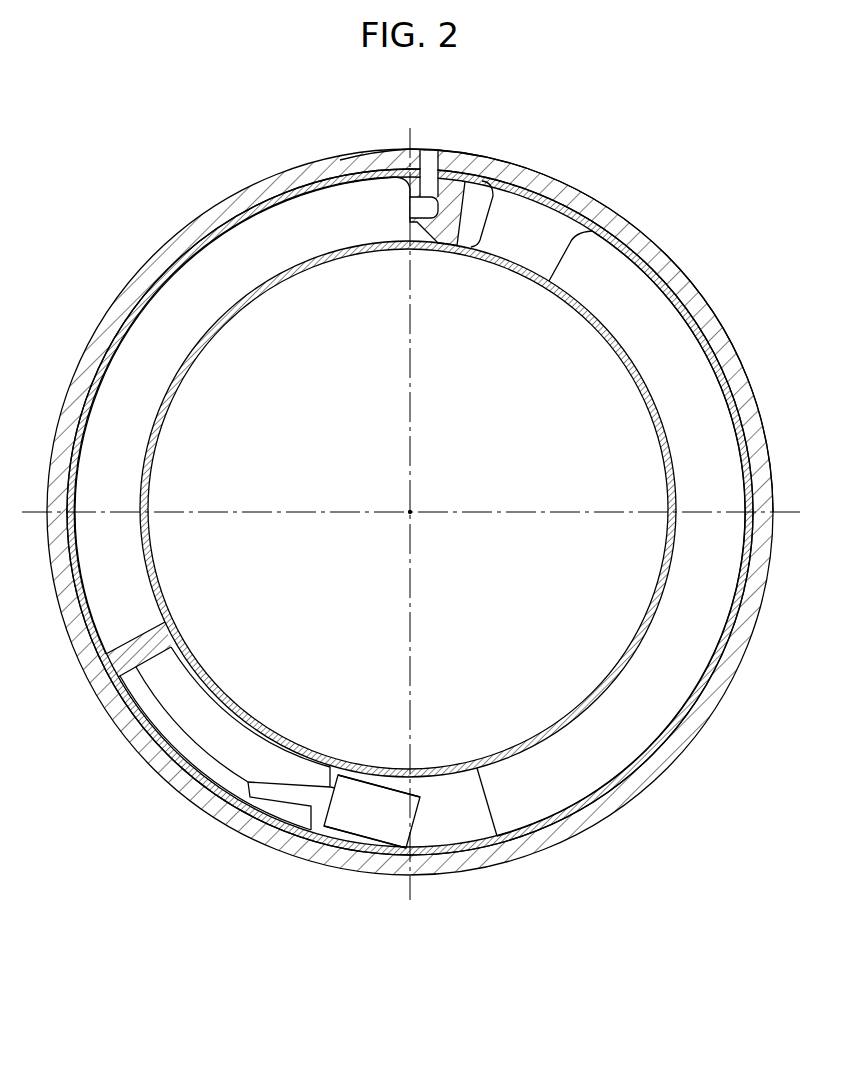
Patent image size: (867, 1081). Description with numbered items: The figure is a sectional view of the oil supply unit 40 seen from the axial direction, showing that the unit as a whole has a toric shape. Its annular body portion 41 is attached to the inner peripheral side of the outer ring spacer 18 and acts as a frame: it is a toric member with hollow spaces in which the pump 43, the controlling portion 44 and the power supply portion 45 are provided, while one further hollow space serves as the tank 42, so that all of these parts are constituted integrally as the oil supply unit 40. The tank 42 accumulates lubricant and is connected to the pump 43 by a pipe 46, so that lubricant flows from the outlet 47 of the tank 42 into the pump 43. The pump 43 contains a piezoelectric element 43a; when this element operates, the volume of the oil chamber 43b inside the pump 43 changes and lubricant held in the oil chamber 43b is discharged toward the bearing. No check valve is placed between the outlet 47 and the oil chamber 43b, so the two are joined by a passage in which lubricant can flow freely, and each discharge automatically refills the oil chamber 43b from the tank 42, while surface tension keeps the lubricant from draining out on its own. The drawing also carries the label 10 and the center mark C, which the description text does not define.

The electric actuator 10 is at (650, 790).
The outer ring spacer 18 is at (318, 178).
The oil supply unit 40 is at (240, 212).
The body portion 41 is at (172, 778).
The tank 42 is at (152, 300).
The pump 43 is at (356, 775).
The piezoelectric element 43a is at (368, 832).
The oil chamber 43b is at (383, 775).
The controlling portion 44 is at (670, 333).
The power supply portion 45 is at (700, 486).
The pipe 46 is at (245, 792).
The outlet 47 is at (150, 655).
The center axis C is at (410, 512).